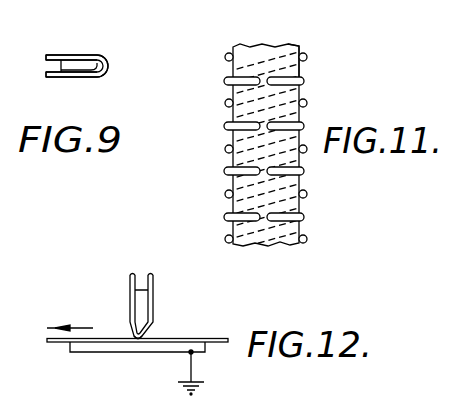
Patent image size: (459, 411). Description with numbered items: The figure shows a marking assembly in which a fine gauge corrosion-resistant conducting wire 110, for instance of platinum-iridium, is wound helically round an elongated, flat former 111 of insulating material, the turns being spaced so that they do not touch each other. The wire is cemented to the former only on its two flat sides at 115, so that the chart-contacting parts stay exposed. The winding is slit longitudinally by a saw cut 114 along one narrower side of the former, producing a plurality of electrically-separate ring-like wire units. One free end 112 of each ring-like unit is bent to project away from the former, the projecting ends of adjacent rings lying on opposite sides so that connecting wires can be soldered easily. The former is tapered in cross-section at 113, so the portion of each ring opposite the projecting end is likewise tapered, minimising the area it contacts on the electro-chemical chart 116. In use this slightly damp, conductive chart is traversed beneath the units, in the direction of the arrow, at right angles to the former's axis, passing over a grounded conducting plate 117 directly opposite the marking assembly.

In FIG. 9, the conducting wire 110 is at (92, 62).
In FIG. 11, the conducting wire 110 is at (304, 80).
In FIG. 12, the conducting wire 110 is at (147, 332).
In FIG. 9, the former 111 is at (96, 62).
In FIG. 11, the former 111 is at (300, 48).
In FIG. 12, the former 111 is at (147, 291).
In FIG. 9, the free end 112 is at (46, 54).
In FIG. 11, the free end 112 is at (306, 103).
In FIG. 9, the tapered portion 113 is at (109, 66).
In FIG. 11, the saw cut 114 is at (264, 75).
In FIG. 9, the cemented flat sides 115 is at (78, 54).
In FIG. 12, the electro-chemical chart 116 is at (224, 339).
In FIG. 12, the grounded conducting plate 117 is at (142, 352).